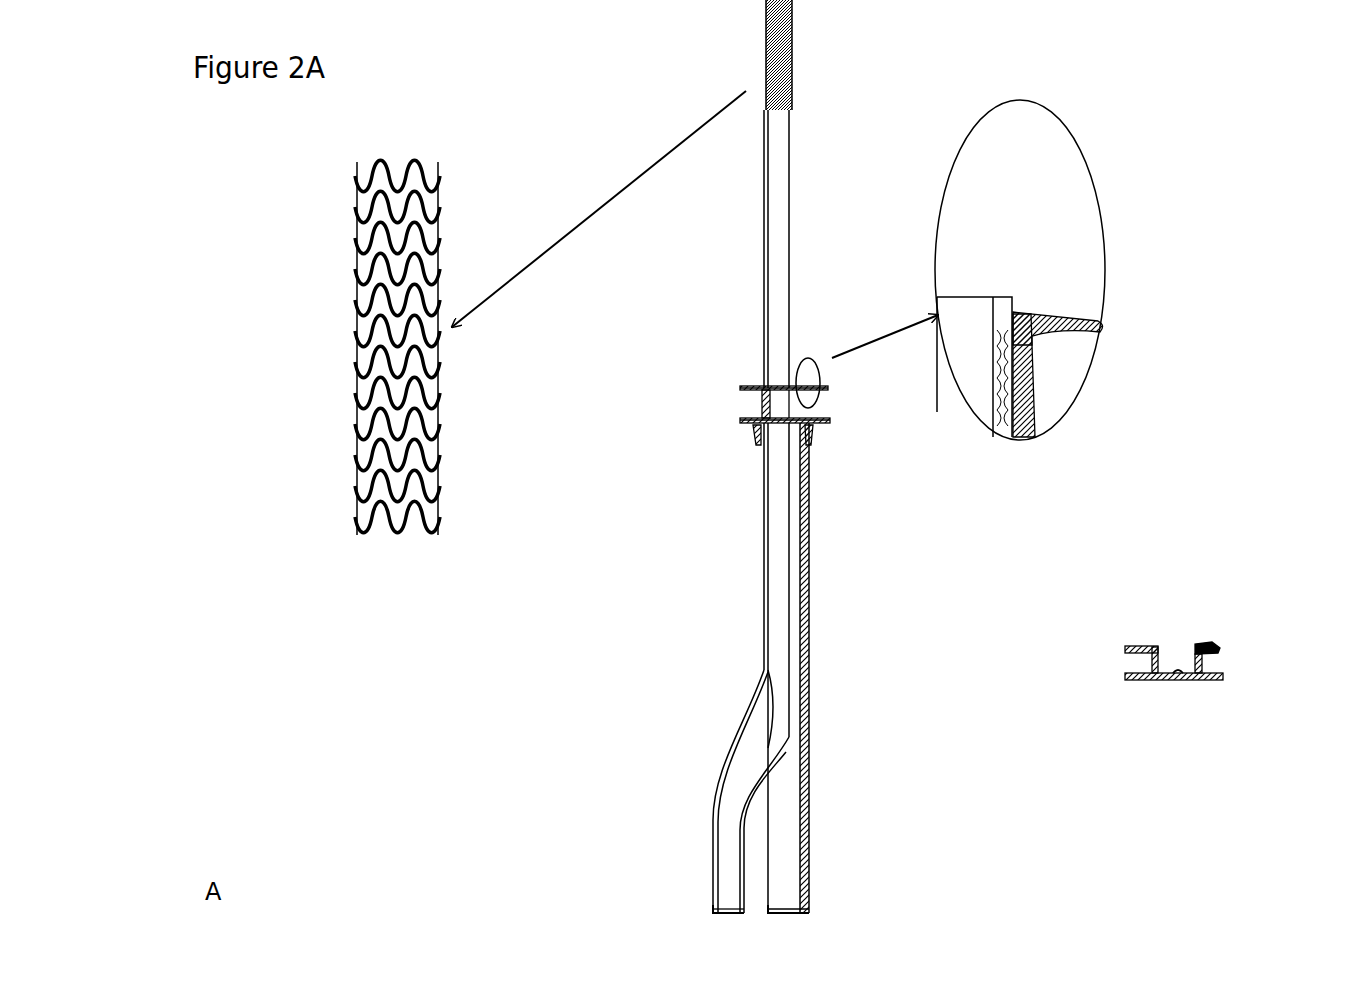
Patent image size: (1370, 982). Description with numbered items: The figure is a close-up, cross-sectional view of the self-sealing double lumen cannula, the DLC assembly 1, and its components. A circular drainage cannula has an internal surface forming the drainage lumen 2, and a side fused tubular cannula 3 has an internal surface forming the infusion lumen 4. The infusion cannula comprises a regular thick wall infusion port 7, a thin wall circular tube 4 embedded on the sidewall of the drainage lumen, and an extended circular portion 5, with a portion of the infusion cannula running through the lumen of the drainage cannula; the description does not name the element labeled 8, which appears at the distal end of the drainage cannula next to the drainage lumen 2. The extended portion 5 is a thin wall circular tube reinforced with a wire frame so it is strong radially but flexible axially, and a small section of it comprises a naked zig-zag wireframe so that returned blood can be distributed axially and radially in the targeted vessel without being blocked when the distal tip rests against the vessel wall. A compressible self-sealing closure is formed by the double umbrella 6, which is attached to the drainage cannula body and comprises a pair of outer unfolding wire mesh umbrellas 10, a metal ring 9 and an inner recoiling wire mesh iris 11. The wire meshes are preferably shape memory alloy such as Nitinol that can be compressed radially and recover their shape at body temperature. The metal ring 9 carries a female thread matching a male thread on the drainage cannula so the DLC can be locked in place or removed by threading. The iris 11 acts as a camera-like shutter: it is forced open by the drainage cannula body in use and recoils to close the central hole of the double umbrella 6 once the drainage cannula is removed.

The DLC assembly 1 is at (810, 633).
The drainage lumen 2 is at (780, 798).
The side fused tubular cannula 3 is at (712, 822).
The infusion lumen 4 is at (775, 632).
The extended circular portion 5 is at (755, 108).
The double umbrella 6 is at (760, 385).
The thick wall infusion port 7 is at (720, 898).
The distal end of main tube 8 is at (792, 905).
The metal ring 9 is at (1030, 360).
The outer unfolding wire mesh umbrellas 10 is at (735, 388).
The inner recoiling wire mesh iris 11 is at (822, 442).